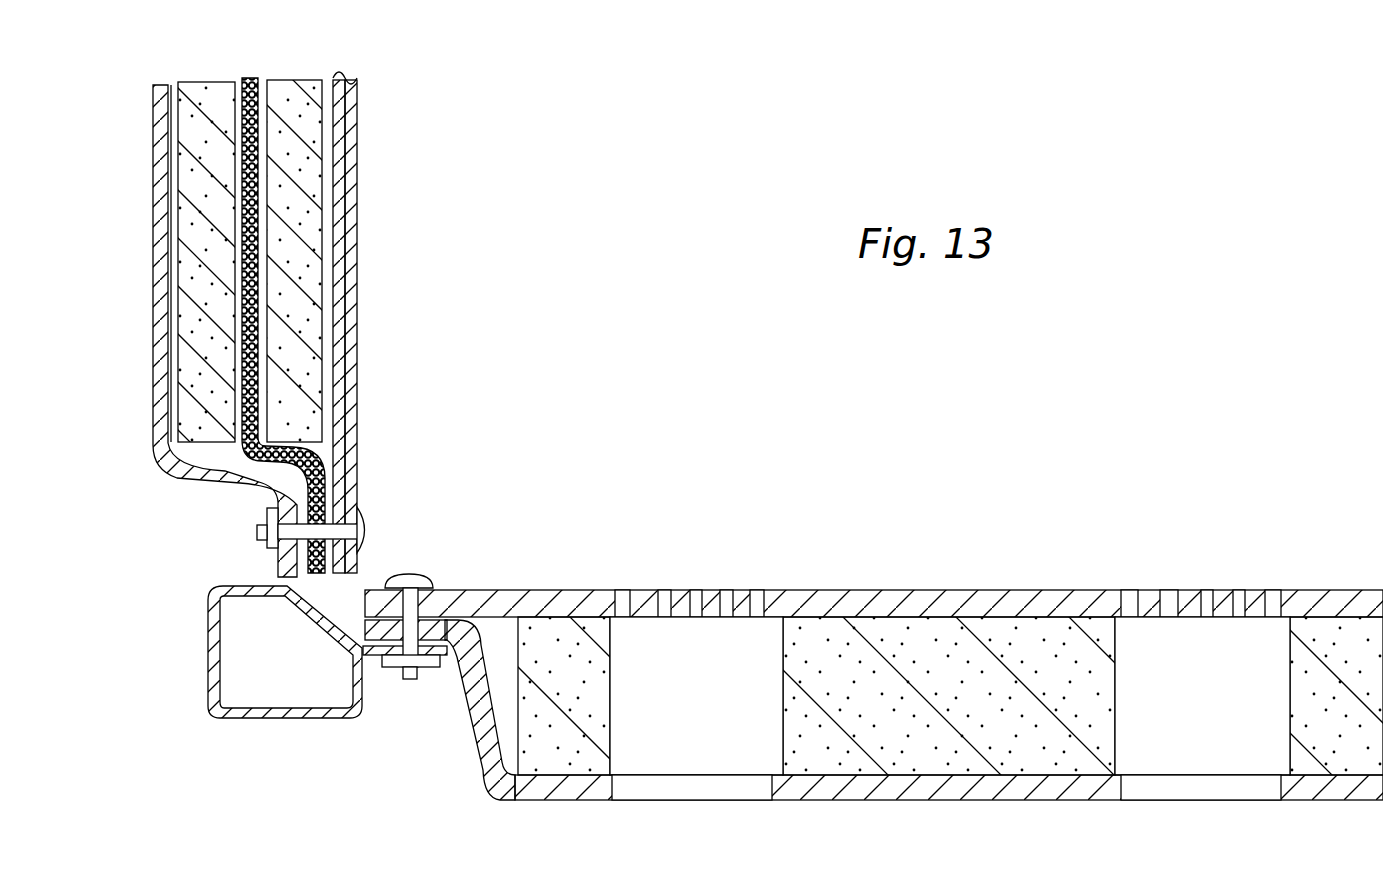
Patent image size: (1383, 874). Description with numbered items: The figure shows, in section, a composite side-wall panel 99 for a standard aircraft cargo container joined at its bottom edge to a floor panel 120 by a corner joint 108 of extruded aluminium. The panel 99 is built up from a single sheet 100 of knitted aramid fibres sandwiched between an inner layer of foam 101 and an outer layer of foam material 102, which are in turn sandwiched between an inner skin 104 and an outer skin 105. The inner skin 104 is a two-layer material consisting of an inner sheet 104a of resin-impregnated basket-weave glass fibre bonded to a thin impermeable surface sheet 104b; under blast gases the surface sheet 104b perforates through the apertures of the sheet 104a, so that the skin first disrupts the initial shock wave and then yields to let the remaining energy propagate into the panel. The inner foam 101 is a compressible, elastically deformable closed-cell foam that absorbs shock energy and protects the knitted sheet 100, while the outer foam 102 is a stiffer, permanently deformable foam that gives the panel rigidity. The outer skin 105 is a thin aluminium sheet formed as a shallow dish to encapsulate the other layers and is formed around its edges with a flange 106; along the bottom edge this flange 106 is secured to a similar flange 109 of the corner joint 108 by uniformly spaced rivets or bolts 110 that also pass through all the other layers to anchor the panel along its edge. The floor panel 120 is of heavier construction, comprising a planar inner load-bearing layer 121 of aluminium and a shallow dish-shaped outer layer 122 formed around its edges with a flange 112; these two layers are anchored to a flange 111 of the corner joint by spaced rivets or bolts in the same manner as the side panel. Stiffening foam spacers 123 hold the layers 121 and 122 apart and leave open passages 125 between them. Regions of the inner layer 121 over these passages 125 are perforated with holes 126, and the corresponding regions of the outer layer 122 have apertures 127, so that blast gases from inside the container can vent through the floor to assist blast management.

The panel 99 is at (165, 481).
The sheet of knitted aramid fibres 100 is at (242, 202).
The inner layer of foam 101 is at (310, 156).
The outer layer of foam material 102 is at (195, 127).
The inner skin 104 is at (384, 304).
The inner sheet of basket-weave glass fibre 104a is at (345, 257).
The surface sheet 104b is at (353, 360).
The outer skin 105 is at (153, 356).
The flange 106 is at (297, 571).
The corner joint 108 is at (210, 690).
The flange of the corner joint extrusion 109 is at (278, 563).
The rivets or bolts 110 is at (395, 575).
The flange of the corner joint 111 is at (370, 658).
The flange 112 is at (437, 628).
The floor panel 120 is at (490, 797).
The inner load-bearing layer 121 is at (860, 592).
The outer layer 122 is at (895, 790).
The stiffening foam spacers 123 is at (1301, 718).
The open passages 125 is at (670, 702).
The holes 126 is at (722, 585).
The apertures 127 is at (630, 776).